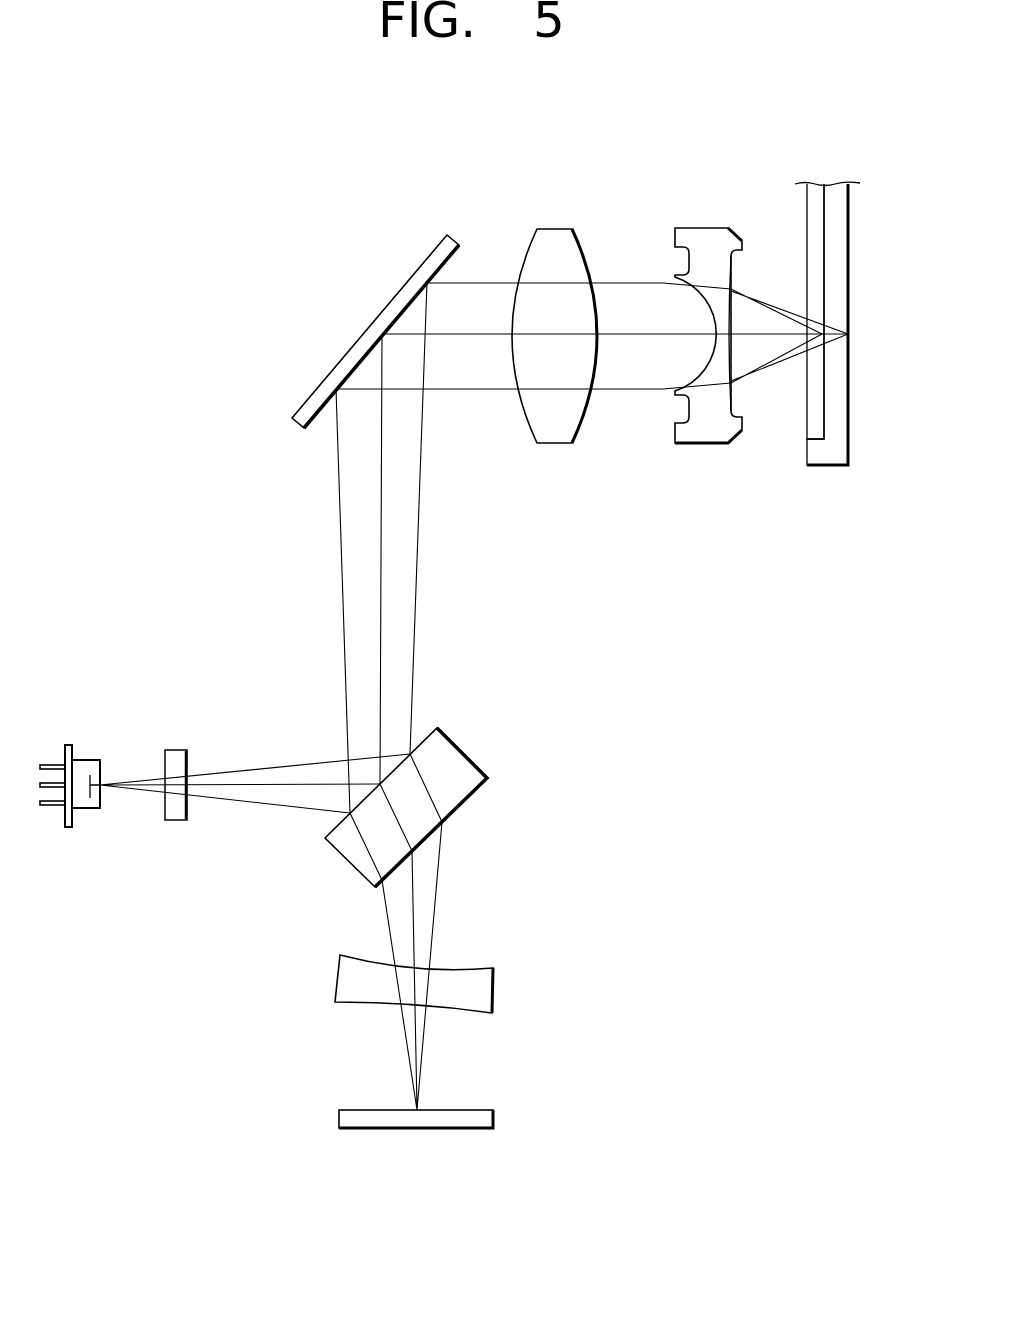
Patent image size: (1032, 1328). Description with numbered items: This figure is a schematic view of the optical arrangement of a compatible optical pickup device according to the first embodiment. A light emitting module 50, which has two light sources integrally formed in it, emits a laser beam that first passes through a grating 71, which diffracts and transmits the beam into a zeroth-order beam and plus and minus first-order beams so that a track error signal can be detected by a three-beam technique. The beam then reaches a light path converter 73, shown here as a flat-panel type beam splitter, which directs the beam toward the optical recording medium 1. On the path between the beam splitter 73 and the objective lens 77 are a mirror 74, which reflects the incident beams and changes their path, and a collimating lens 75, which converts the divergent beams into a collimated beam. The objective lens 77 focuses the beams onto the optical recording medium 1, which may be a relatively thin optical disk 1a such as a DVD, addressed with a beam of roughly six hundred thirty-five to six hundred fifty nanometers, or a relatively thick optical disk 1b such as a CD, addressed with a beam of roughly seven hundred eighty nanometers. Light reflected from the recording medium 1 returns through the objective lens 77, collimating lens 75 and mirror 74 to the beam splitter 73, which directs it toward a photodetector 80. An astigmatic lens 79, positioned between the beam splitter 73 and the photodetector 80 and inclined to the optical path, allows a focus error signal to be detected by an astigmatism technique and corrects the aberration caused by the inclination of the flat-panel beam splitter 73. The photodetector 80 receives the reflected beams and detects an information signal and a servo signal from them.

The optical recording medium 1 is at (811, 407).
The thin optical disk 1a is at (812, 417).
The thick optical disk 1b is at (836, 440).
The light emitting module 50 is at (83, 832).
The grating 71 is at (177, 749).
The light path converter 73 is at (470, 757).
The mirror 74 is at (400, 287).
The collimating lens 75 is at (557, 229).
The objective lens 77 is at (706, 227).
The astigmatic lens 79 is at (472, 972).
The photodetector 80 is at (480, 1109).